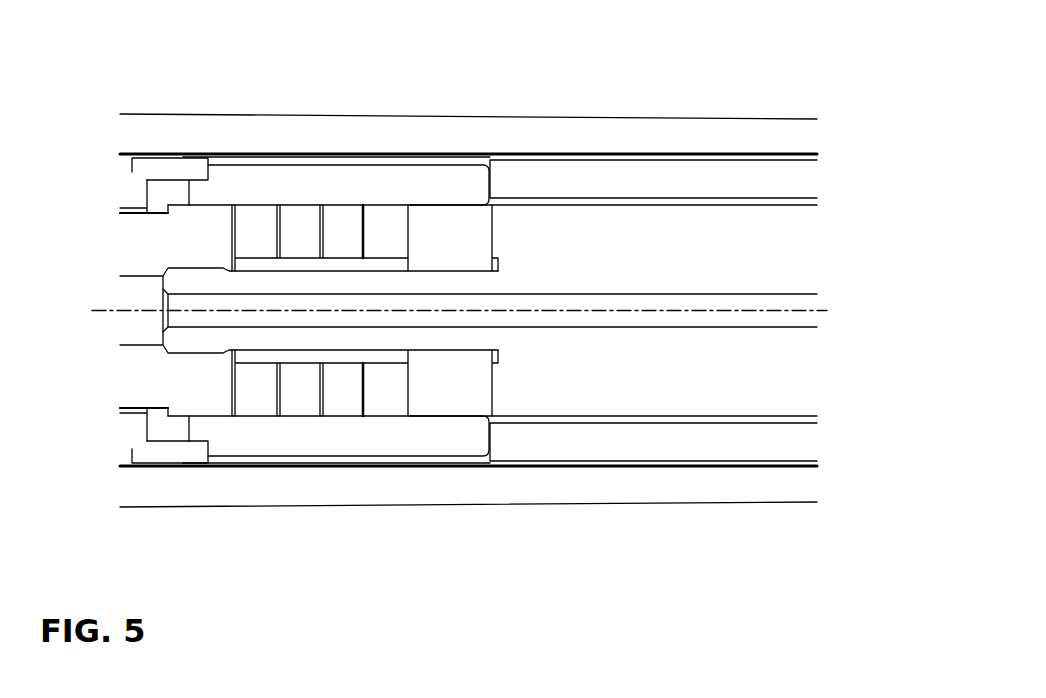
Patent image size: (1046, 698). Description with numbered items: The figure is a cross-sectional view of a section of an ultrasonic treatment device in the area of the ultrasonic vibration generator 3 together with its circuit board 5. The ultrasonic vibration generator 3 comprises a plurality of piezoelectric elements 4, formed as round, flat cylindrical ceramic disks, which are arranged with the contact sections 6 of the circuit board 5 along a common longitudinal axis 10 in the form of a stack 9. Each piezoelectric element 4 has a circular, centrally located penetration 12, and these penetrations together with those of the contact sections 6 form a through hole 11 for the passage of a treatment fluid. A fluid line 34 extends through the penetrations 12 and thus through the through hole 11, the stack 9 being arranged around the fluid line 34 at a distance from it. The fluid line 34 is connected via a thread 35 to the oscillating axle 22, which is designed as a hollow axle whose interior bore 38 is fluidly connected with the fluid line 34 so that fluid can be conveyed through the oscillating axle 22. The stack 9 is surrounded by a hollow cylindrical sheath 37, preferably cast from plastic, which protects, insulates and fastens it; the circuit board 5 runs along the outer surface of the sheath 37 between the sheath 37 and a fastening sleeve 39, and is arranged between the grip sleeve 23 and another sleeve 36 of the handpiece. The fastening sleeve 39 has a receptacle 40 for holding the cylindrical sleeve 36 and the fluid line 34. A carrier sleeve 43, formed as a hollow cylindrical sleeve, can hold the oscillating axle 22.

The ultrasonic vibration generator 3 is at (275, 135).
The piezoelectric elements 4 is at (335, 398).
The circuit board 5 is at (675, 155).
The contact sections 6 is at (367, 195).
The stack 9 is at (393, 437).
The longitudinal axis 10 is at (827, 310).
The through hole 11 is at (262, 255).
The penetration 12 is at (378, 256).
The oscillating axle 22 is at (124, 236).
The grip sleeve 23 is at (543, 116).
The fluid line 34 is at (595, 321).
The thread 35 is at (185, 364).
The sleeve 36 is at (823, 244).
The sheath 37 is at (301, 164).
The interior bore 38 is at (145, 345).
The fastening sleeve 39 is at (818, 182).
The receptacle 40 is at (810, 420).
The carrier sleeve 43 is at (132, 161).